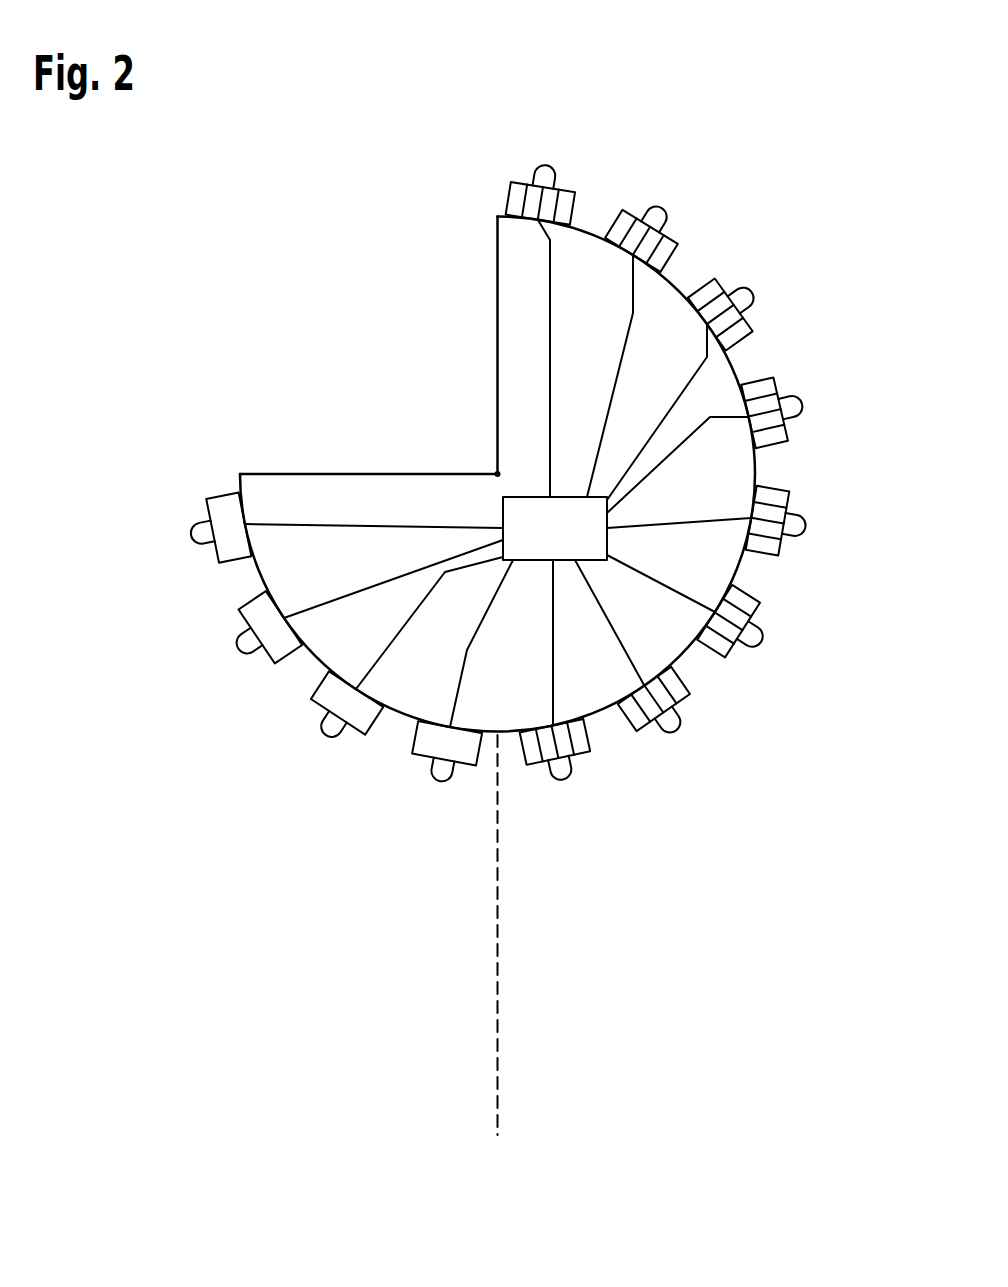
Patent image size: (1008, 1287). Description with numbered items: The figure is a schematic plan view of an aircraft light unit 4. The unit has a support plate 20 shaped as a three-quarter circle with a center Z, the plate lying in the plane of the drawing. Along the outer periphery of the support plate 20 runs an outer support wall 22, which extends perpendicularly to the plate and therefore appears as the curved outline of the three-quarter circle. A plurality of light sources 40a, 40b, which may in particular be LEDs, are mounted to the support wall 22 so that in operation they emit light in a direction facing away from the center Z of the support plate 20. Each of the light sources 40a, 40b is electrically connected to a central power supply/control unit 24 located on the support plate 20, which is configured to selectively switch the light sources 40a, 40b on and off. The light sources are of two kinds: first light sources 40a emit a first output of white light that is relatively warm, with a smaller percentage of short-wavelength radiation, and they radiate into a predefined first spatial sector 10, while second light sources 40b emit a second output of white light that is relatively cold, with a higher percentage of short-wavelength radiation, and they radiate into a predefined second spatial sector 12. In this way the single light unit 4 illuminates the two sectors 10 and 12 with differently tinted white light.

The aircraft light unit 4 is at (281, 245).
The first spatial sector 10 is at (97, 517).
The second spatial sector 12 is at (830, 955).
The support plate 20 is at (520, 279).
The outer support wall 22 is at (253, 573).
The central power supply/control unit 24 is at (503, 515).
The center Z is at (495, 471).
The first light sources 40a is at (442, 783).
The second light sources 40b is at (546, 165).